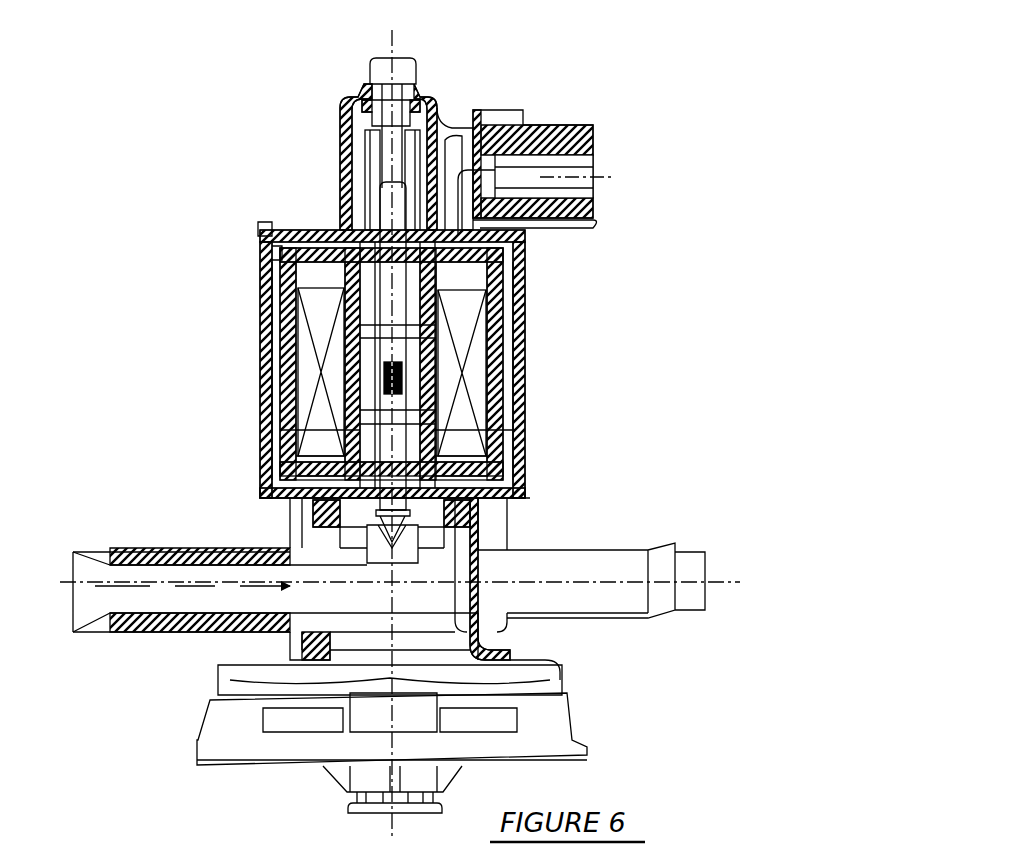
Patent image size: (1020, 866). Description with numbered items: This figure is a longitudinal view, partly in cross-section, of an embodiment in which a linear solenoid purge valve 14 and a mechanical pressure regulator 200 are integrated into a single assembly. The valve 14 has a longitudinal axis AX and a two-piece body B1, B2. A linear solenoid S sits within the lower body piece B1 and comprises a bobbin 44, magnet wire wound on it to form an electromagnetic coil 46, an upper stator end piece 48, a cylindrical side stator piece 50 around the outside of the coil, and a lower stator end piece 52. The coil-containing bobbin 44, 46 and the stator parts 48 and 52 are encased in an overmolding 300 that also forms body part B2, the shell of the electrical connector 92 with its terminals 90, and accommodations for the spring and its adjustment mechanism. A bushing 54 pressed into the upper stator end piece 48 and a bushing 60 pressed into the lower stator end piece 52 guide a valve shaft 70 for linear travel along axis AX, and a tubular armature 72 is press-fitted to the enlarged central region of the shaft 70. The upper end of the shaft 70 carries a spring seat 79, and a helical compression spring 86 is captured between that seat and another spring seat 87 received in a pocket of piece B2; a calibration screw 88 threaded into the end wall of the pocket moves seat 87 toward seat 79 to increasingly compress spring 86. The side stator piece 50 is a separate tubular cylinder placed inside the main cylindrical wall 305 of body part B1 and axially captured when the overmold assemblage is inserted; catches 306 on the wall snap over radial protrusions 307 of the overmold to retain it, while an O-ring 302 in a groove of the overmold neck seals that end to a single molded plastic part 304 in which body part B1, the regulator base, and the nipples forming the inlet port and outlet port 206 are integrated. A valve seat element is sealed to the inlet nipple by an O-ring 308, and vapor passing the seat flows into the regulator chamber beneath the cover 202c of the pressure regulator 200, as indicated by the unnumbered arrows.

The longitudinal axis AX is at (405, 40).
The calibration screw 88 is at (402, 76).
The body piece B2 is at (346, 120).
The overmolding 300 is at (420, 110).
The spring seat 87 is at (442, 120).
The helical coiled linear compression spring 86 is at (364, 174).
The terminals 90 is at (540, 181).
The bushing 54 is at (470, 241).
The electrical connector 92 is at (585, 226).
The spring seat 79 is at (368, 236).
The main cylindrical wall 305 is at (258, 304).
The catches 306 is at (258, 238).
The radial protrusions 307 is at (270, 254).
The upper stator end piece 48 is at (300, 246).
The bobbin 44 is at (320, 398).
The electromagnetic coil 46 is at (330, 442).
The cylindrical side stator piece 50 is at (276, 338).
The linear solenoid S is at (506, 324).
The tubular armature 72 is at (488, 334).
The valve shaft 70 is at (476, 378).
The bushing 60 is at (496, 436).
The lower stator end piece 52 is at (300, 478).
The single molded plastic part 304 is at (528, 506).
The body piece B1 is at (302, 500).
The O-ring 302 is at (330, 516).
The valve 14 is at (236, 208).
The outlet port 206 is at (613, 550).
The O-ring 308 is at (302, 604).
The cover 202c is at (560, 752).
The mechanical pressure regulator 200 is at (193, 771).